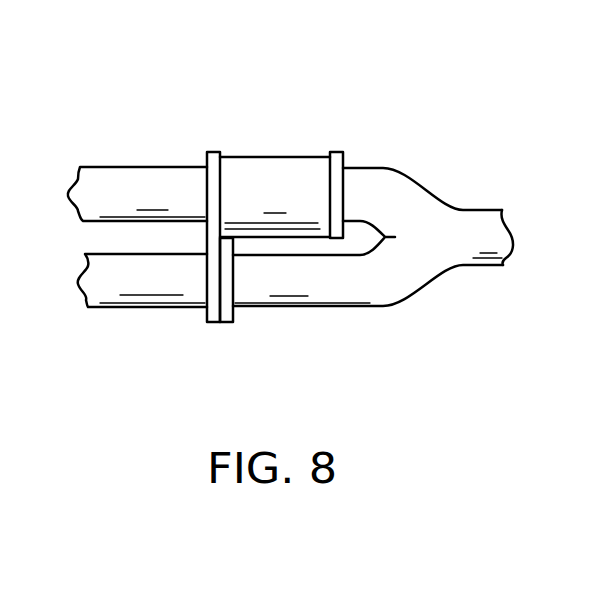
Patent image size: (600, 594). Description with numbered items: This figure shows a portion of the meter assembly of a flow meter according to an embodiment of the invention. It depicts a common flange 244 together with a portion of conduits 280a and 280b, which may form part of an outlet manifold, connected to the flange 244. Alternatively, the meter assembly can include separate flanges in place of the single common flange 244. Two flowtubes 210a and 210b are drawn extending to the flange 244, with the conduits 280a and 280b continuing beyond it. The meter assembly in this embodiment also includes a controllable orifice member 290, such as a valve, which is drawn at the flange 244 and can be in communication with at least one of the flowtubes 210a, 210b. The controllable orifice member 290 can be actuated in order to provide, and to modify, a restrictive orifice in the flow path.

The flowtube 210a is at (137, 307).
The flowtube 210b is at (150, 167).
The common flange 244 is at (215, 152).
The conduit 280a is at (313, 307).
The conduit 280b is at (370, 167).
The controllable orifice member 290 is at (280, 155).